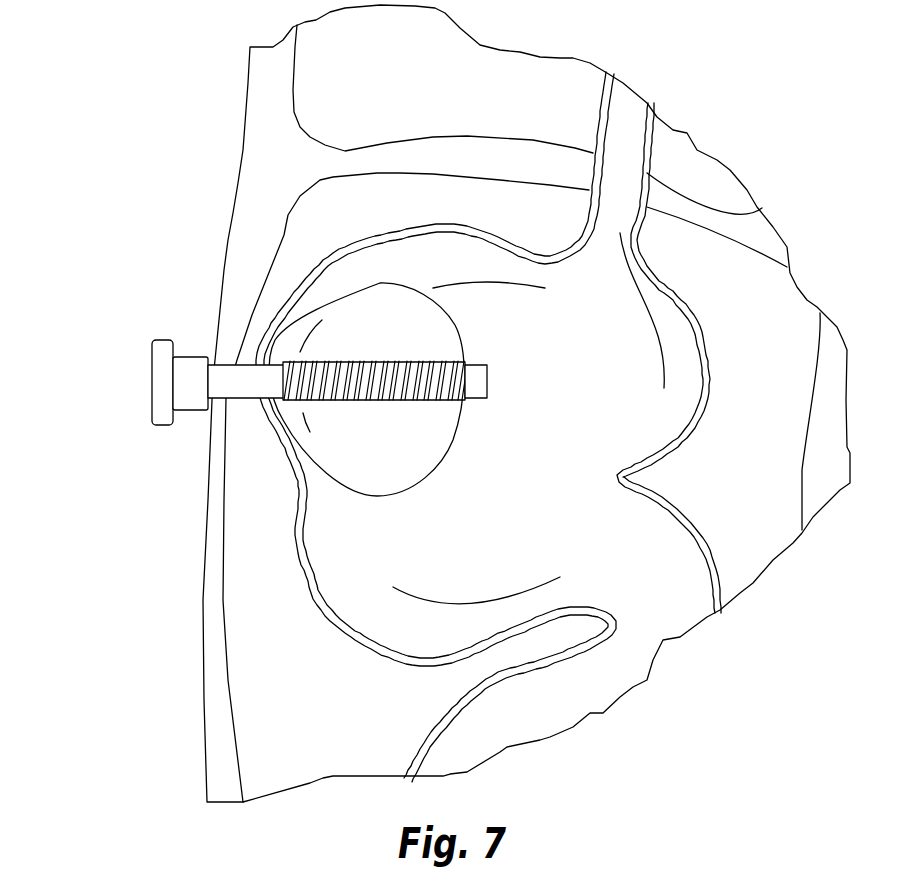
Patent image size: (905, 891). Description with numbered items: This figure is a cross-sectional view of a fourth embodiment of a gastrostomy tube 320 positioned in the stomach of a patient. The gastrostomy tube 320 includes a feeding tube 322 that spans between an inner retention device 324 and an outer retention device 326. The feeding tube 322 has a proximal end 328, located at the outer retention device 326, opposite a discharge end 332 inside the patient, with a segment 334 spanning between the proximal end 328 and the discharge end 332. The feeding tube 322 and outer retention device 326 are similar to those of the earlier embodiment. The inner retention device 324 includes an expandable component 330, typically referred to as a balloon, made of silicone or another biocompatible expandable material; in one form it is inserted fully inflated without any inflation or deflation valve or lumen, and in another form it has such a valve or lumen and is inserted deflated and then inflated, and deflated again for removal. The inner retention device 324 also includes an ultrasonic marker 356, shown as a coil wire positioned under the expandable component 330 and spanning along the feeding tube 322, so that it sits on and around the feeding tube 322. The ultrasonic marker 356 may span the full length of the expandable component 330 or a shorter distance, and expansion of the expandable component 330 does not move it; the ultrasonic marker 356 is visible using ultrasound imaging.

The gastrostomy tube 320 is at (300, 384).
The feeding tube 322 is at (232, 400).
The inner retention device 324 is at (365, 283).
The outer retention device 326 is at (142, 357).
The proximal end 328 is at (222, 378).
The expandable component 330 is at (355, 438).
The discharge end 332 is at (481, 387).
The segment 334 is at (345, 358).
The ultrasonic marker 356 is at (440, 434).